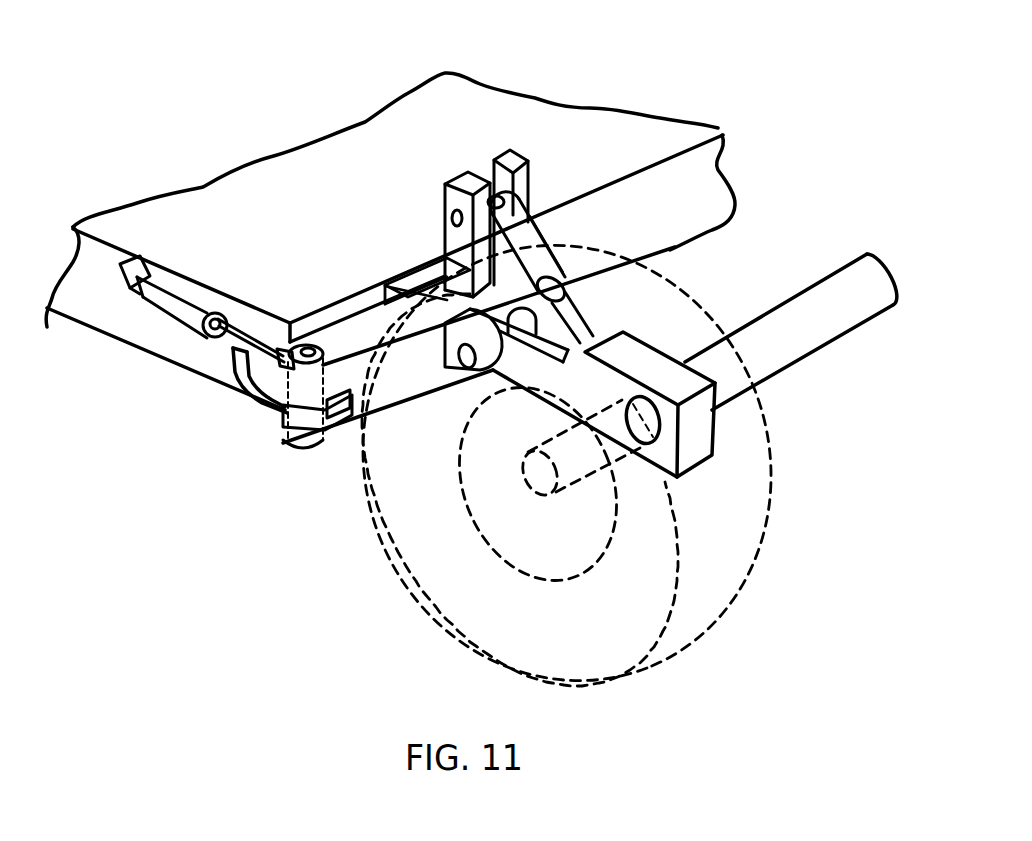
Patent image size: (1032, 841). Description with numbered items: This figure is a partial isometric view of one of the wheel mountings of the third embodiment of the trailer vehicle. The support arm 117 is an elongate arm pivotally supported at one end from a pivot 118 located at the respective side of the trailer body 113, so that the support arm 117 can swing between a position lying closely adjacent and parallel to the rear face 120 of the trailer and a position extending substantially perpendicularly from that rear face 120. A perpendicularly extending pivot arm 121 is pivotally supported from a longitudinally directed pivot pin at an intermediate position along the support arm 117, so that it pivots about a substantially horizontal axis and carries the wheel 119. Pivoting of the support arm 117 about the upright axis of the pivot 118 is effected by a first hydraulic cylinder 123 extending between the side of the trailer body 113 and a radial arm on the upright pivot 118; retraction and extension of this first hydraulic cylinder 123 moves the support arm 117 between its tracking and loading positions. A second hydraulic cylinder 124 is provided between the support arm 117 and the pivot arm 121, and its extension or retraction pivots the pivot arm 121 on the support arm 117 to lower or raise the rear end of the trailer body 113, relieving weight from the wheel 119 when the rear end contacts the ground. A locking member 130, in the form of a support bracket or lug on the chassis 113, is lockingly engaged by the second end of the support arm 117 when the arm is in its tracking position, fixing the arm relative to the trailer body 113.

The trailer body 113 is at (468, 98).
The support arm 117 is at (385, 407).
The pivot 118 is at (278, 410).
The wheel 119 is at (400, 560).
The rear face 120 is at (703, 187).
The pivot arm 121 is at (700, 445).
The first hydraulic cylinder 123 is at (168, 297).
The second hydraulic cylinder 124 is at (548, 236).
The locking member 130 is at (417, 278).